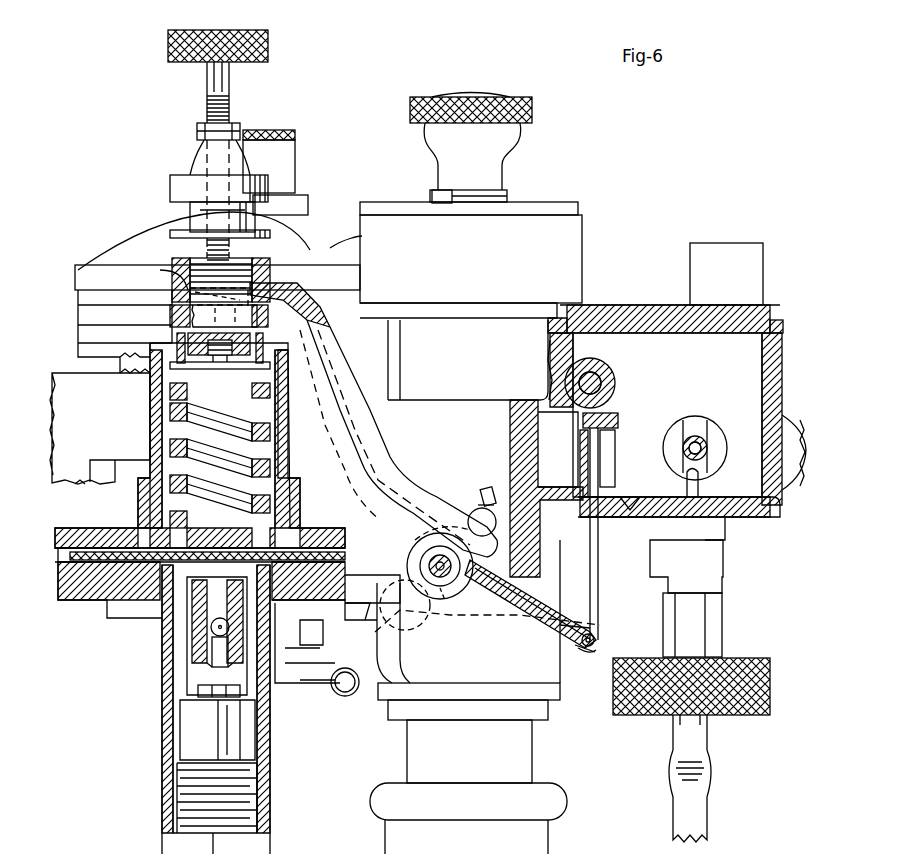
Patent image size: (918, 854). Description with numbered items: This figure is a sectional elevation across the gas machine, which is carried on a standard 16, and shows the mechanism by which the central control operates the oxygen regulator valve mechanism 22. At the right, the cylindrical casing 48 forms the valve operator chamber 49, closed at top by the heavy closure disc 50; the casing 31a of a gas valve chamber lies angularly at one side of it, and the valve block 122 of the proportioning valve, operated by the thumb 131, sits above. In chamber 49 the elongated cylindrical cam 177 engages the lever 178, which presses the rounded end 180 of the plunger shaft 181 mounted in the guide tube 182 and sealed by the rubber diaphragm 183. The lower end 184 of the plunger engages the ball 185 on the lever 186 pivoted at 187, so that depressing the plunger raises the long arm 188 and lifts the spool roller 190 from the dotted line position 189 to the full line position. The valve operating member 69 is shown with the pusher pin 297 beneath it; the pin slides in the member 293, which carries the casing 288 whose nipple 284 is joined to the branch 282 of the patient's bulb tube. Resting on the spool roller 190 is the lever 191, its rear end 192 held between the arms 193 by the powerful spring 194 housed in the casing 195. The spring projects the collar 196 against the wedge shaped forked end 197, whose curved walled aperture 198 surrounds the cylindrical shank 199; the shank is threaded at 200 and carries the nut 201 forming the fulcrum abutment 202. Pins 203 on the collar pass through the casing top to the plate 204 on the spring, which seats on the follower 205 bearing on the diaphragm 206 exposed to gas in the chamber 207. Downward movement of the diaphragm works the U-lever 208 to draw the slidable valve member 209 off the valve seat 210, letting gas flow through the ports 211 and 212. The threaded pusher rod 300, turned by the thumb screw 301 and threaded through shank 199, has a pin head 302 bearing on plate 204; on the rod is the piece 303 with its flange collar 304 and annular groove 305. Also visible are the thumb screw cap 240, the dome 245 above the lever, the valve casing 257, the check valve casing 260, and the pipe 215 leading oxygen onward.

The thumb screw 301 is at (268, 48).
The threaded pusher rod 300 is at (232, 112).
The thumb screw cap 240 is at (295, 150).
The piece 303 is at (169, 186).
The annular groove 305 is at (256, 232).
The flange collar 304 is at (168, 234).
The dome cover 245 is at (170, 228).
The wedge shaped forked end 197 is at (178, 282).
The threads 200 is at (252, 262).
The nut 201 is at (272, 262).
The fulcrum abutment 202 is at (285, 275).
The curved walled aperture 198 is at (330, 276).
The collar 196 is at (268, 310).
The cylindrical shank 199 is at (182, 302).
The pins 203 is at (176, 342).
The plate 204 is at (150, 360).
The valve casing 257 is at (65, 372).
The spring 194 is at (160, 412).
The casing 195 is at (165, 426).
The pin head 302 is at (222, 369).
The check valve casing 260 is at (80, 492).
The follower 205 is at (296, 520).
The regulator valve mechanism 22 is at (85, 592).
The diaphragm 206 is at (128, 565).
The chamber 207 is at (155, 572).
The U-lever 208 is at (190, 635).
The port 212 is at (212, 630).
The port 211 is at (205, 660).
The valve seat 210 is at (202, 678).
The slidable valve member 209 is at (200, 725).
The pipe 215 is at (345, 696).
The thumb 131 is at (534, 110).
The valve block 122 is at (532, 200).
The closure disc 50 is at (612, 312).
The chamber 49 is at (745, 360).
The cylindrical casing 48 is at (772, 380).
The elongated cylindrical cam 177 is at (615, 366).
The lever 178 is at (612, 416).
The rounded end 180 is at (612, 430).
The plunger shaft 181 is at (588, 448).
The guide tube 182 is at (610, 462).
The rubber diaphragm 183 is at (625, 520).
The valve operating member 69 is at (700, 440).
The pusher pin 297 is at (698, 488).
The casing 31a is at (798, 492).
The lever 191 is at (402, 482).
The rear end 192 is at (462, 540).
The arms 193 is at (482, 500).
The dotted line position 189 is at (415, 620).
The spool roller 190 is at (450, 580).
The long arm 188 is at (520, 610).
The pivot 187 is at (577, 650).
The lower end 184 is at (598, 625).
The ball 185 is at (597, 638).
The lever 186 is at (598, 650).
The member 293 is at (722, 640).
The casing 288 is at (770, 688).
The nipple 284 is at (693, 725).
The branch 282 is at (703, 803).
The standard 16 is at (545, 838).